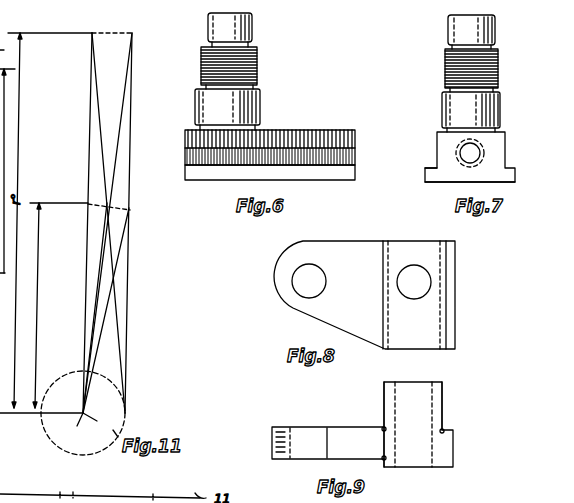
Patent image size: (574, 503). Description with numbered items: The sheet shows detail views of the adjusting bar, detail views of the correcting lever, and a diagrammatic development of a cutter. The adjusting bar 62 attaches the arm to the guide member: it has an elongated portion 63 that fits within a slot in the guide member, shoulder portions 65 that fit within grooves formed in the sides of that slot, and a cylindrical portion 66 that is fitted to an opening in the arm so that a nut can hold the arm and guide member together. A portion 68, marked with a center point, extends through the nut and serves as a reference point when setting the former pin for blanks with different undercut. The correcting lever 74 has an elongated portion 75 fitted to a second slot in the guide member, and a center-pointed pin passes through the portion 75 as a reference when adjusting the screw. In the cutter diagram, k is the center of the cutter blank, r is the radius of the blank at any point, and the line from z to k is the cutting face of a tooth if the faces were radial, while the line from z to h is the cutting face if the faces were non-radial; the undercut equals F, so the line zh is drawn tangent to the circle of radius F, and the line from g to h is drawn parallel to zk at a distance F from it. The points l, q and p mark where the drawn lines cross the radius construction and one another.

In FIG. 6, the adjusting bar 62 is at (305, 76).
In FIG. 6, the elongated portion 63 is at (313, 130).
In FIG. 7, the elongated portion 63 is at (500, 146).
In FIG. 6, the shoulder portions 65 is at (425, 176).
In FIG. 7, the shoulder portions 65 is at (514, 176).
In FIG. 6, the cylindrical portion 66 is at (258, 108).
In FIG. 7, the cylindrical portion 66 is at (501, 108).
In FIG. 6, the portion having a center point 68 is at (252, 27).
In FIG. 7, the portion having a center point 68 is at (495, 33).
In FIG. 9, the correcting lever 74 is at (353, 408).
In FIG. 8, the elongated portion 75 is at (443, 323).
In FIG. 9, the elongated portion 75 is at (442, 398).
In FIG. 11, the point z is at (93, 32).
In FIG. 11, the point g is at (133, 33).
In FIG. 11, the point l is at (88, 204).
In FIG. 11, the point q is at (110, 203).
In FIG. 11, the point p is at (129, 208).
In FIG. 11, the point h is at (125, 413).
In FIG. 11, the center of the cutter blank k is at (71, 432).
In FIG. 11, the total undercut F is at (104, 423).
In FIG. 11, the radius of the cutter blank r is at (33, 316).